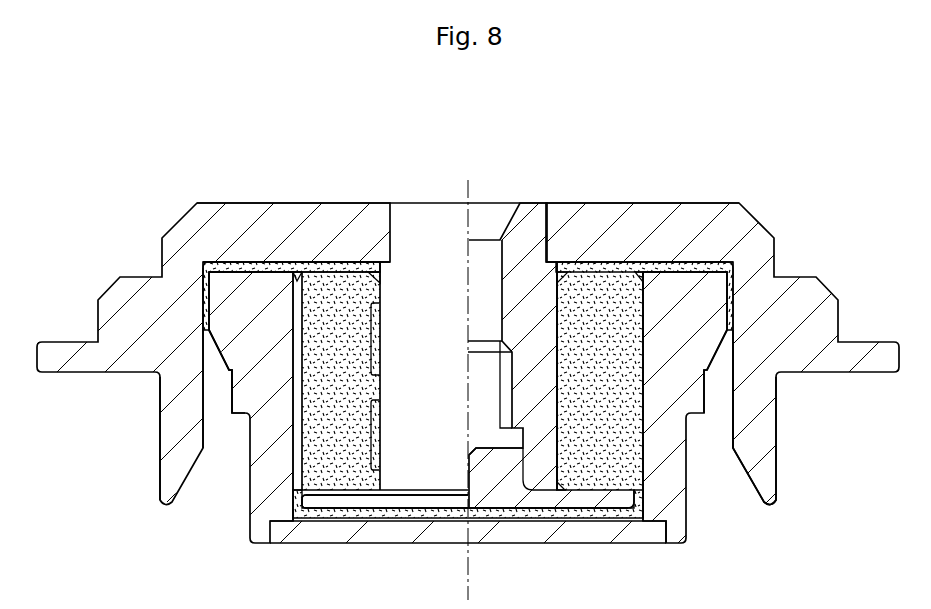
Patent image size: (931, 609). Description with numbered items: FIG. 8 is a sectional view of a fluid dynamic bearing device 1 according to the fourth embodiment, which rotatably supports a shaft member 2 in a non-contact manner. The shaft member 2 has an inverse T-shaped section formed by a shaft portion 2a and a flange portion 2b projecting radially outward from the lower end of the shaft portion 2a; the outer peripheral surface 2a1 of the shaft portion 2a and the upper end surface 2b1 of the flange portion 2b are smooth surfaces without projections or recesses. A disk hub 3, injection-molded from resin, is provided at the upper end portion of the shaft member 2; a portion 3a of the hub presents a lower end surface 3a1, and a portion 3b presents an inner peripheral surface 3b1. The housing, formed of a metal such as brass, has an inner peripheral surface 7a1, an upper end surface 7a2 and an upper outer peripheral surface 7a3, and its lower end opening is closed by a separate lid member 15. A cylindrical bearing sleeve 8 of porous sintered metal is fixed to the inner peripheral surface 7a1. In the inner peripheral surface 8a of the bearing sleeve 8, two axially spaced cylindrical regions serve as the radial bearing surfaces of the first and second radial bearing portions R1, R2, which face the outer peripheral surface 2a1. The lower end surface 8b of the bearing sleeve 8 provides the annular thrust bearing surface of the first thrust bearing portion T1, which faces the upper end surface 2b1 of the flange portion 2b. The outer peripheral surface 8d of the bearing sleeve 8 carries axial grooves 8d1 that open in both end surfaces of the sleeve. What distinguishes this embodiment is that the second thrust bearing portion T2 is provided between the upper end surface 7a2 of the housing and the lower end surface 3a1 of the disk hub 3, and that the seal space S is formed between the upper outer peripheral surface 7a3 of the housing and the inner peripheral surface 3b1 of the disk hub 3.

The fluid dynamic bearing device 1 is at (503, 158).
The shaft member 2 is at (523, 268).
The shaft portion 2a is at (432, 470).
The outer peripheral surface 2a1 is at (558, 452).
The flange portion 2b is at (537, 506).
The upper end surface 2b1 is at (367, 495).
The disk hub 3 is at (729, 203).
The housing upper portion 3a is at (678, 228).
The lower end surface 3a1 is at (278, 262).
The housing lower portion 3b is at (762, 443).
The inner peripheral surface 3b1 is at (209, 349).
The inner peripheral surface 7a1 is at (640, 307).
The upper end surface 7a2 is at (230, 263).
The upper outer peripheral surface 7a3 is at (205, 385).
The bearing sleeve 8 is at (587, 293).
The inner peripheral surface 8a is at (556, 368).
The lower end surface 8b is at (322, 510).
The outer peripheral surface 8d is at (203, 453).
The axial grooves 8d1 is at (207, 267).
The lid member 15 is at (483, 533).
The first thrust bearing portion T1 is at (335, 496).
The second thrust bearing portion T2 is at (243, 262).
The first radial bearing portion R1 is at (364, 341).
The second radial bearing portion R2 is at (363, 437).
The seal space S is at (200, 313).